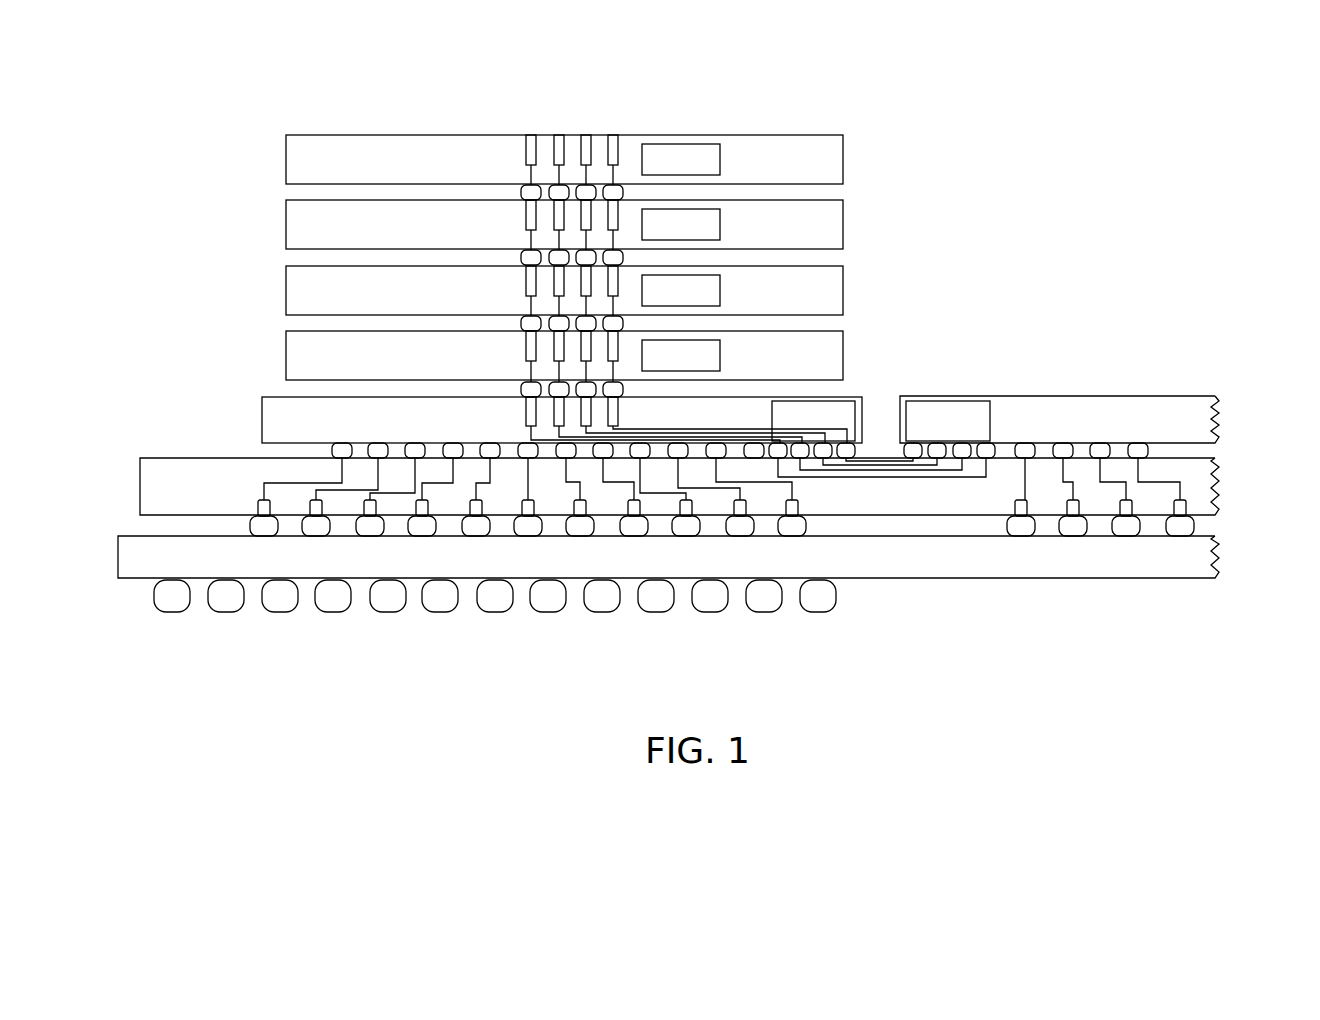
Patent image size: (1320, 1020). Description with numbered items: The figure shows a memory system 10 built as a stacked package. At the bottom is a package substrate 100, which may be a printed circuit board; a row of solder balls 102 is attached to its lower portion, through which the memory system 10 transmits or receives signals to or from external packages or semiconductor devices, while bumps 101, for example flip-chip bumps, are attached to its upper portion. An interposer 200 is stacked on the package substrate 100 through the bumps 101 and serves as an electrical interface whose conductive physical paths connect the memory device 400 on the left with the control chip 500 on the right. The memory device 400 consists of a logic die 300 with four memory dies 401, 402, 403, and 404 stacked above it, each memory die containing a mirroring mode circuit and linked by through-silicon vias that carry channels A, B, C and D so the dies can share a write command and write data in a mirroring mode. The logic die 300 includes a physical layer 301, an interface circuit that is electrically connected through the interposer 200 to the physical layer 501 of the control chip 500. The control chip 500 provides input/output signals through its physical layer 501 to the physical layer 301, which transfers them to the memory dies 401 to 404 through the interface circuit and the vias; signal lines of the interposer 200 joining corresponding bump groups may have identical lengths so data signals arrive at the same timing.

The memory system 10 is at (166, 131).
The package substrate 100 is at (1214, 554).
The bumps 101 is at (1194, 521).
The solder ball 102 is at (832, 602).
The interposer 200 is at (1198, 487).
The logic die 300 is at (617, 400).
The physical layer 301 is at (862, 409).
The memory device 400 is at (622, 266).
The memory die 401 is at (596, 364).
The memory die 402 is at (845, 277).
The memory die 403 is at (845, 211).
The memory die 404 is at (845, 146).
The control chip 500 is at (1059, 382).
The physical layer 501 is at (982, 398).